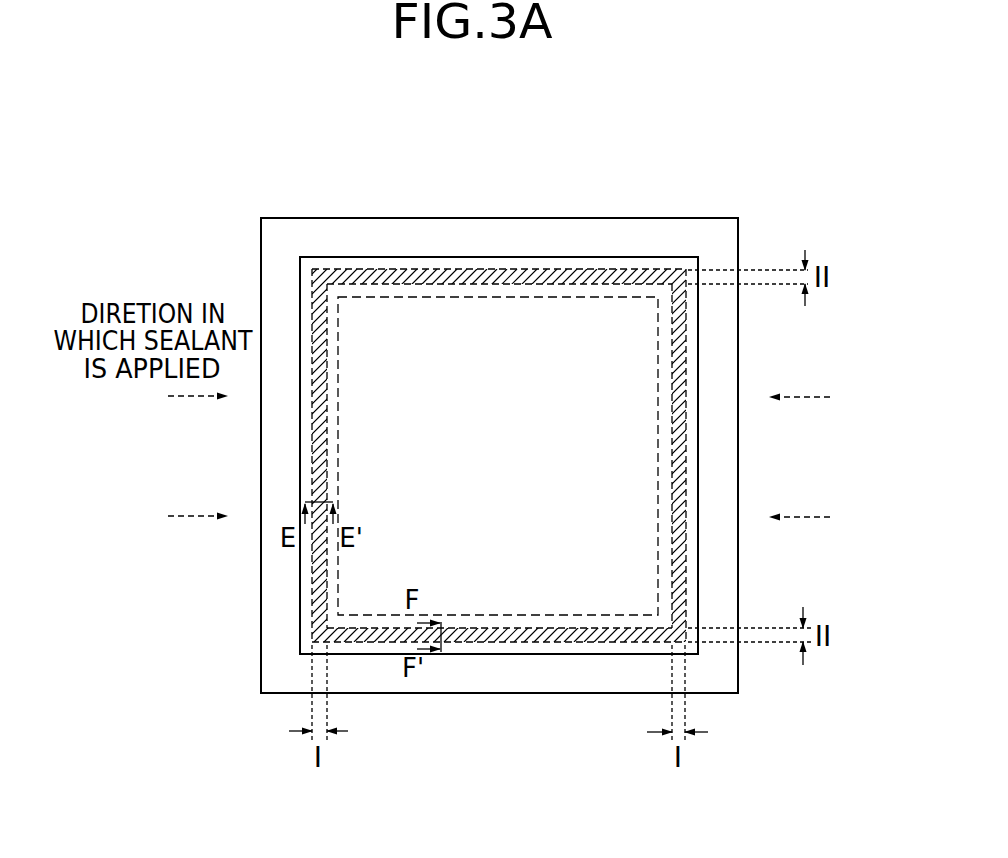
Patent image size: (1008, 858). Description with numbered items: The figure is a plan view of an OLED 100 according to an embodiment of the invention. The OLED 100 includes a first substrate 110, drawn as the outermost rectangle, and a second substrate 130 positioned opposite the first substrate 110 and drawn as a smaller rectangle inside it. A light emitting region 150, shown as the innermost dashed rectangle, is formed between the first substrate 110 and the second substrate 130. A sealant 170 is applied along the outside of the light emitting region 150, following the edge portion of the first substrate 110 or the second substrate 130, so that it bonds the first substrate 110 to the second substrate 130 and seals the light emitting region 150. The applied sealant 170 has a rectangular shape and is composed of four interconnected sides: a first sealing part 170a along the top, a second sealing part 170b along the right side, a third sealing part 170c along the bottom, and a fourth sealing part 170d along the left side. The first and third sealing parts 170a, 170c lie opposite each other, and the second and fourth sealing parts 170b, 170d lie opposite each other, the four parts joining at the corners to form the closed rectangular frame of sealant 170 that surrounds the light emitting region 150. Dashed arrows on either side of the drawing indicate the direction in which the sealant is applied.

The OLED 100 is at (270, 132).
The first substrate 110 is at (738, 232).
The second substrate 130 is at (634, 257).
The light emitting region 150 is at (613, 483).
The sealant 170 is at (312, 583).
The first sealing part 170a is at (386, 275).
The second sealing part 170b is at (680, 337).
The third sealing part 170c is at (495, 642).
The fourth sealing part 170d is at (322, 448).